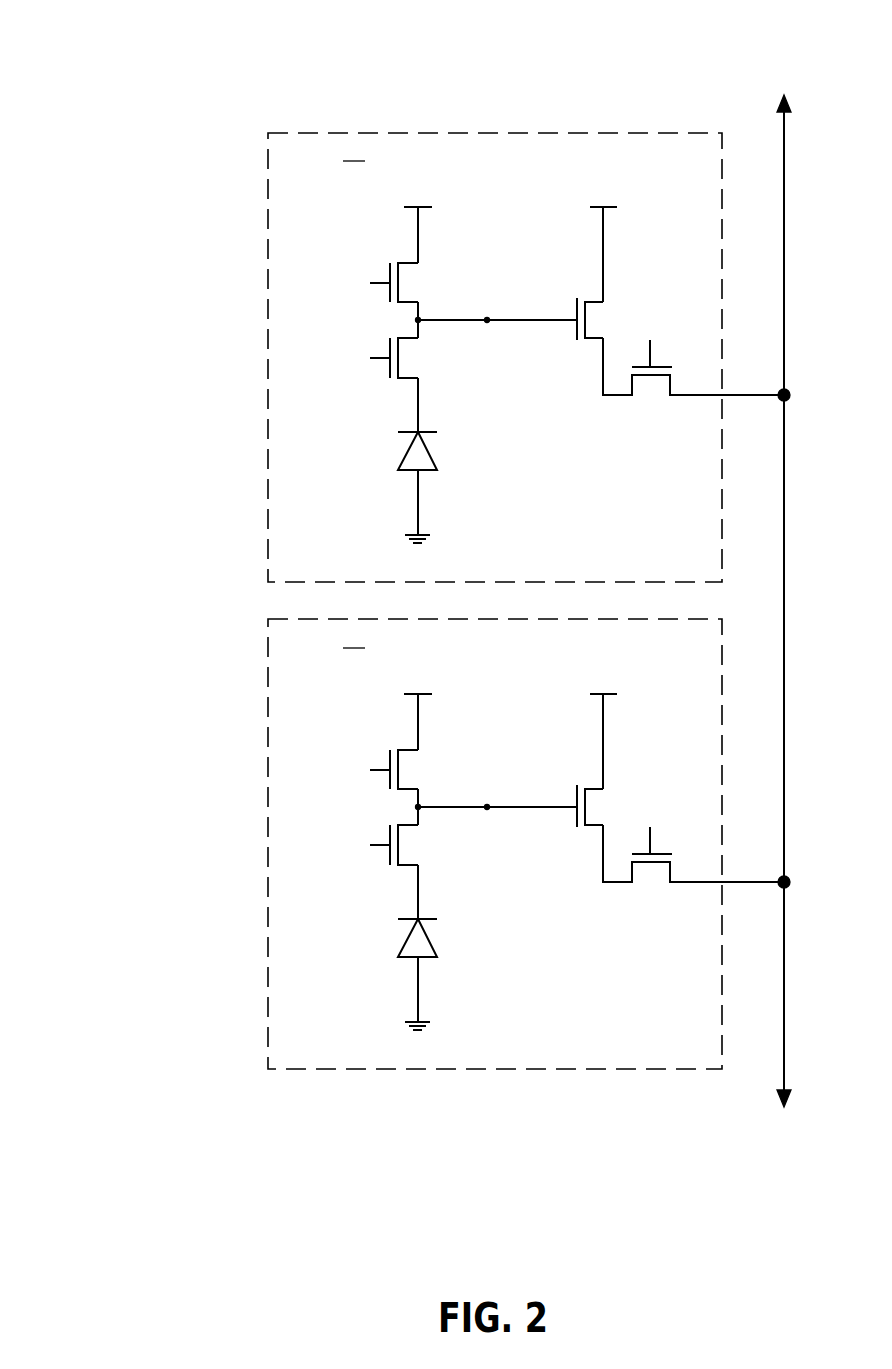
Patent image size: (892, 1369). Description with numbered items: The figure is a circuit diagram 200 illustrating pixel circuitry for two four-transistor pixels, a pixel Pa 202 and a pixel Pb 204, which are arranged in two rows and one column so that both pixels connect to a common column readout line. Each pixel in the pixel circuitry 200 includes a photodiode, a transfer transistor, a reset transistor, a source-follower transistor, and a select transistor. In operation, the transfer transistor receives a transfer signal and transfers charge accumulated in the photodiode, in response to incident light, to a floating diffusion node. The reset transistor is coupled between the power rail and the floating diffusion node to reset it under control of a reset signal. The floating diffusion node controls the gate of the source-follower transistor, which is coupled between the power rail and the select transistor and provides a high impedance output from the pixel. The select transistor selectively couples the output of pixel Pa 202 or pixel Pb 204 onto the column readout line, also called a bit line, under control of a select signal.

The circuit diagram 200 is at (60, 22).
The pixel Pa 202 is at (268, 153).
The pixel Pb 204 is at (268, 640).